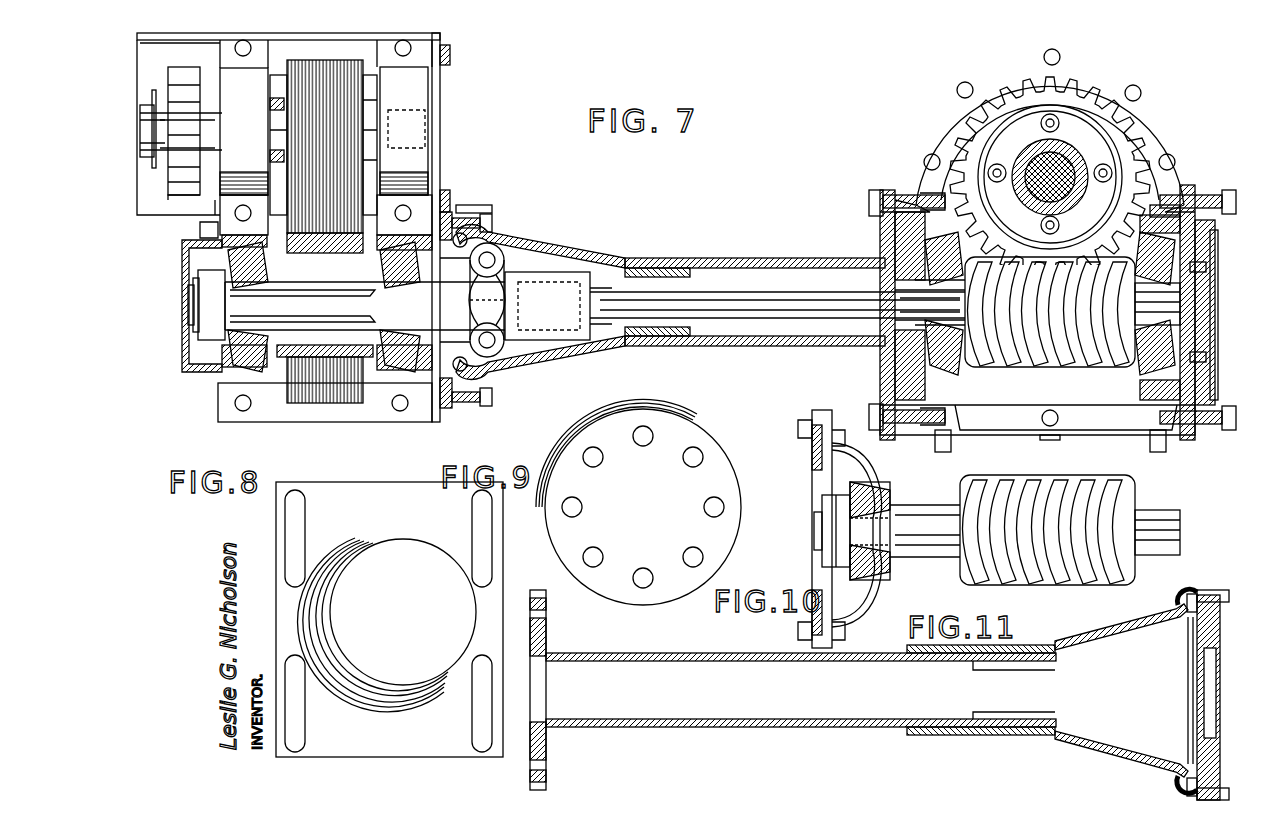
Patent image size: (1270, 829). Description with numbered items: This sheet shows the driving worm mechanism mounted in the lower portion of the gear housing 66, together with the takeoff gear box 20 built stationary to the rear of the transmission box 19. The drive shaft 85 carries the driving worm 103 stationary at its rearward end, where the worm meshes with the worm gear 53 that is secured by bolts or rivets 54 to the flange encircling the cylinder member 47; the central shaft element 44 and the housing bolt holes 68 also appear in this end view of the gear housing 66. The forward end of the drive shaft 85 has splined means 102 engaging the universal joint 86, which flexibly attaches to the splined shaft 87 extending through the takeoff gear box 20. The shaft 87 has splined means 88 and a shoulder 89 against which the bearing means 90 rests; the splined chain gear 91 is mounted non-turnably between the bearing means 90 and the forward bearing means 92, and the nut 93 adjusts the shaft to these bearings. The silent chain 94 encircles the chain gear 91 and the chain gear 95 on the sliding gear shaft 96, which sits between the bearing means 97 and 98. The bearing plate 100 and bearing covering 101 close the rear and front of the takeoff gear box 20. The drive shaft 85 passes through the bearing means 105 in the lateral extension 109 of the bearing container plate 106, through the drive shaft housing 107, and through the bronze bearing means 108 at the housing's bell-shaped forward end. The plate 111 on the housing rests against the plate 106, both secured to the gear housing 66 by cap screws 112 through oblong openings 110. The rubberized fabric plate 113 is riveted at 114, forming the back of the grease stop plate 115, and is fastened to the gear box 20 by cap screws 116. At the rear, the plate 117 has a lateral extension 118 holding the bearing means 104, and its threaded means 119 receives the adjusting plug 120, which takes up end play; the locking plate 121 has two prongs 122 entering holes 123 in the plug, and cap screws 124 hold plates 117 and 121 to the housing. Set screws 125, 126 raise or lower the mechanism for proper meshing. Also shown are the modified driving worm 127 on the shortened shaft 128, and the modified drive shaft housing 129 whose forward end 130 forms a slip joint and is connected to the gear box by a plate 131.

In FIG. 7, the transmission box 19 is at (160, 210).
In FIG. 7, the takeoff gear box 20 is at (425, 57).
In FIG. 7, the shaft 44 is at (1035, 165).
In FIG. 7, the cylinder member 47 is at (1080, 160).
In FIG. 7, the worm gear 53 is at (962, 140).
In FIG. 7, the bolts or rivets 54 is at (1060, 224).
In FIG. 7, the gear housing 66 is at (948, 103).
In FIG. 7, the housing bolt holes 68 is at (965, 82).
In FIG. 7, the drive shaft 85 is at (752, 292).
In FIG. 7, the universal joint 86 is at (505, 345).
In FIG. 7, the splined shaft 87 is at (220, 318).
In FIG. 7, the splined means 88 is at (222, 306).
In FIG. 7, the shoulder 89 is at (437, 298).
In FIG. 7, the bearing means 90 is at (392, 372).
In FIG. 7, the splined chain gear 91 is at (378, 338).
In FIG. 7, the forward bearing means 92 is at (235, 262).
In FIG. 7, the nut 93 is at (210, 280).
In FIG. 7, the silent chain 94 is at (310, 405).
In FIG. 7, the chain gear 95 is at (280, 96).
In FIG. 7, the sliding gear shaft 96 is at (148, 112).
In FIG. 7, the bearing means 97 is at (228, 82).
In FIG. 7, the bearing means 98 is at (415, 95).
In FIG. 7, the bearing plate 100 is at (437, 150).
In FIG. 7, the bearing covering 101 is at (188, 370).
In FIG. 7, the splined means 102 is at (612, 326).
In FIG. 7, the driving worm 103 is at (1046, 366).
In FIG. 7, the bearing means 104 is at (1140, 360).
In FIG. 7, the bearing means 105 is at (935, 292).
In FIG. 7, the bearing container plate 106 is at (895, 238).
In FIG. 7, the drive shaft housing 107 is at (792, 258).
In FIG. 7, the bronze bearing means 108 is at (686, 277).
In FIG. 7, the lateral extension 109 is at (955, 385).
In FIG. 8, the oblong opening 110 is at (298, 503).
In FIG. 7, the plate 111 is at (880, 200).
In FIG. 7, the cap screws 112 is at (873, 190).
In FIG. 7, the rubberized fabric plate 113 is at (478, 225).
In FIG. 7, the riveted means 114 is at (495, 240).
In FIG. 7, the grease stop plate 115 is at (455, 212).
In FIG. 7, the cap screws 116 is at (490, 218).
In FIG. 7, the plate 117 is at (1212, 238).
In FIG. 8, the plate 117 is at (400, 498).
In FIG. 7, the lateral extension 118 is at (1140, 392).
In FIG. 8, the lateral extension 118 is at (333, 631).
In FIG. 7, the threaded means 119 is at (1208, 252).
In FIG. 8, the threaded means 119 is at (352, 700).
In FIG. 7, the adjusting plug 120 is at (1186, 315).
In FIG. 9, the adjusting plug 120 is at (724, 487).
In FIG. 7, the locking plate 121 is at (1215, 320).
In FIG. 7, the prongs 122 is at (1206, 268).
In FIG. 9, the holes 123 is at (703, 457).
In FIG. 7, the cap screws 124 is at (1225, 190).
In FIG. 7, the set screw 125 is at (940, 452).
In FIG. 7, the set screw 126 is at (1155, 452).
In FIG. 10, the modified driving worm 127 is at (1092, 580).
In FIG. 10, the shaft 128 is at (920, 540).
In FIG. 11, the modified drive shaft housing 129 is at (694, 727).
In FIG. 11, the forward end housing 130 is at (1062, 746).
In FIG. 11, the plate 131 is at (1178, 782).